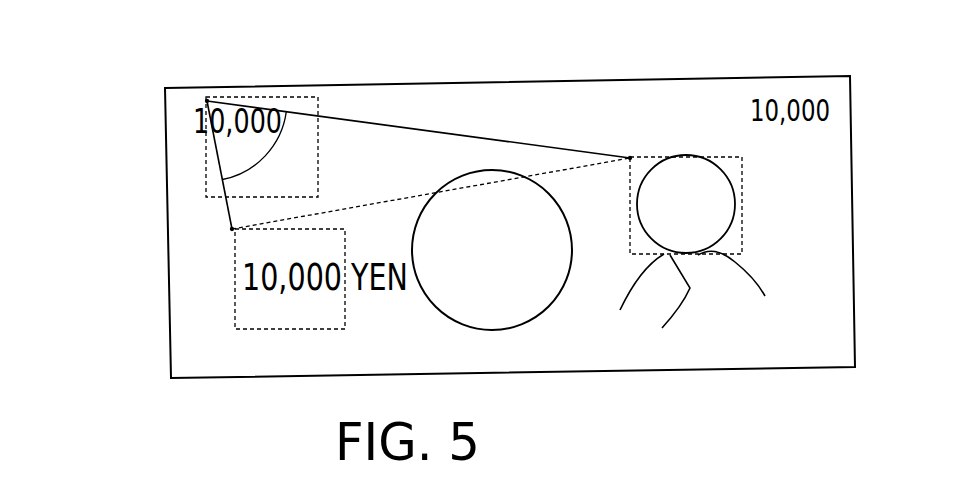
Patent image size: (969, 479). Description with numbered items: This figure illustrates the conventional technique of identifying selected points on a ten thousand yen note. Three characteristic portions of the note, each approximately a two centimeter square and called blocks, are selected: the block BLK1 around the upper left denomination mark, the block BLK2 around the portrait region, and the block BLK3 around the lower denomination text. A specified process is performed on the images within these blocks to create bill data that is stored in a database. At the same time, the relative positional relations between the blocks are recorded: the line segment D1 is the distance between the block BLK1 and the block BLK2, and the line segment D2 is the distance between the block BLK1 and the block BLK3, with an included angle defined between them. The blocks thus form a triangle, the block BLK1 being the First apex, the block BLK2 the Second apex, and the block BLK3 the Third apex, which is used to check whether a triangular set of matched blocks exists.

The block BLK1 is at (296, 97).
The block BLK2 is at (745, 202).
The block BLK3 is at (235, 300).
The line segment D1 is at (452, 132).
The line segment D2 is at (225, 208).
The first apex First apex is at (207, 101).
The second apex Second apex is at (630, 158).
The third apex Third apex is at (235, 230).